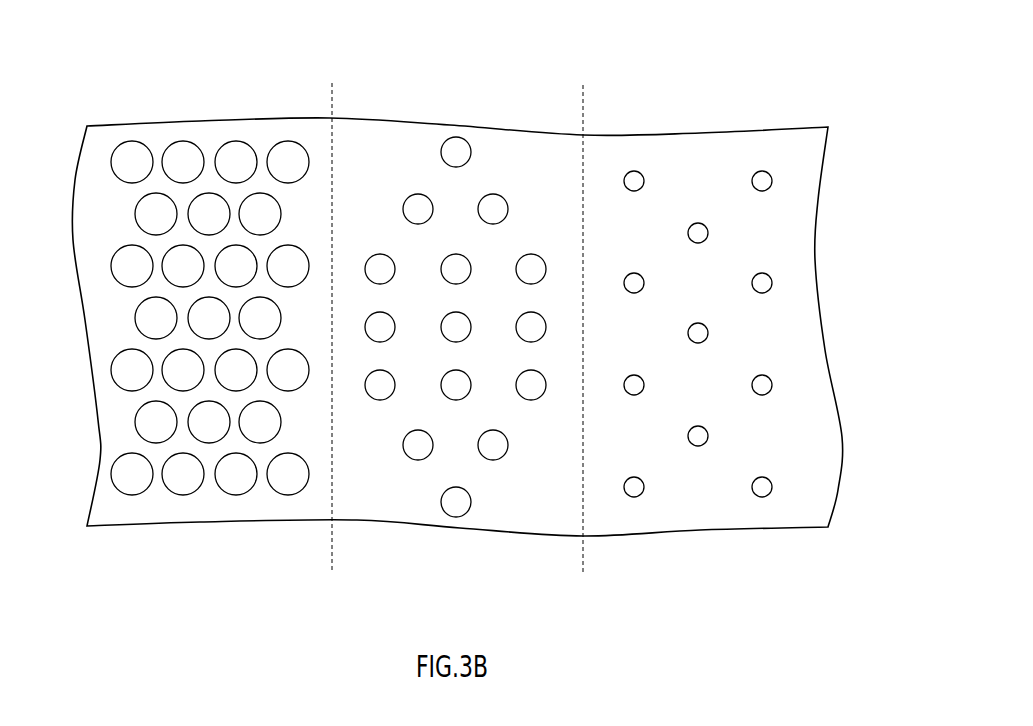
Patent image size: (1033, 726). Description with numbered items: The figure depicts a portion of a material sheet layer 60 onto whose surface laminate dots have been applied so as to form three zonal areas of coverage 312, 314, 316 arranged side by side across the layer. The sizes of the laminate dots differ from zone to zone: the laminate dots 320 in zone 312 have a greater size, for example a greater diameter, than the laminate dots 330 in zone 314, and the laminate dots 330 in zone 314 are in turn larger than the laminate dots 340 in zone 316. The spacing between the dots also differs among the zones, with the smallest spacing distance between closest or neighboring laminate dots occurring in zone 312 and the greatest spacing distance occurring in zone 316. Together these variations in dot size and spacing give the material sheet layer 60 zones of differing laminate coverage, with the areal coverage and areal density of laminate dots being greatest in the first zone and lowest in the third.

The material sheet layer 60 is at (845, 105).
The zonal area of coverage 312 is at (173, 302).
The zonal area of coverage 314 is at (455, 315).
The zonal area of coverage 316 is at (731, 310).
The laminate dots 320 is at (128, 163).
The laminate dots 330 is at (457, 503).
The laminate dots 340 is at (763, 284).